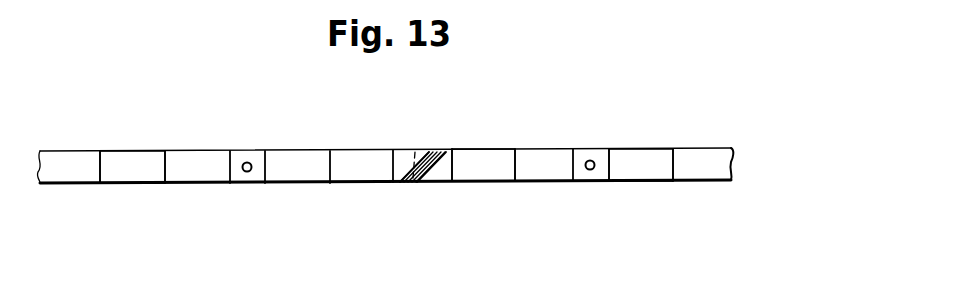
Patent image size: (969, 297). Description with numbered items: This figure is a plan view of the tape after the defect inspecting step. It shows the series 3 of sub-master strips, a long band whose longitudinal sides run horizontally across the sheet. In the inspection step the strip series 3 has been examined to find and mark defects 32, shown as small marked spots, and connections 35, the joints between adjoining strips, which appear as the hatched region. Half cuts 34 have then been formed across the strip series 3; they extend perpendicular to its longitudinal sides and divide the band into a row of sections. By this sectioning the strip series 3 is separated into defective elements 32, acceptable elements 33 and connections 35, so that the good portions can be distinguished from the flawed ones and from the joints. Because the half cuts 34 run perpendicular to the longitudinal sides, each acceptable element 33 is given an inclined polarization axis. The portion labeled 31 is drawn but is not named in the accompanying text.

The series of sub-master strips 3 is at (684, 131).
The weakened tear portion 31 is at (436, 163).
The defective element 32 is at (302, 76).
The acceptable element 33 is at (132, 164).
The half cut 34 is at (167, 172).
The connection 35 is at (414, 176).